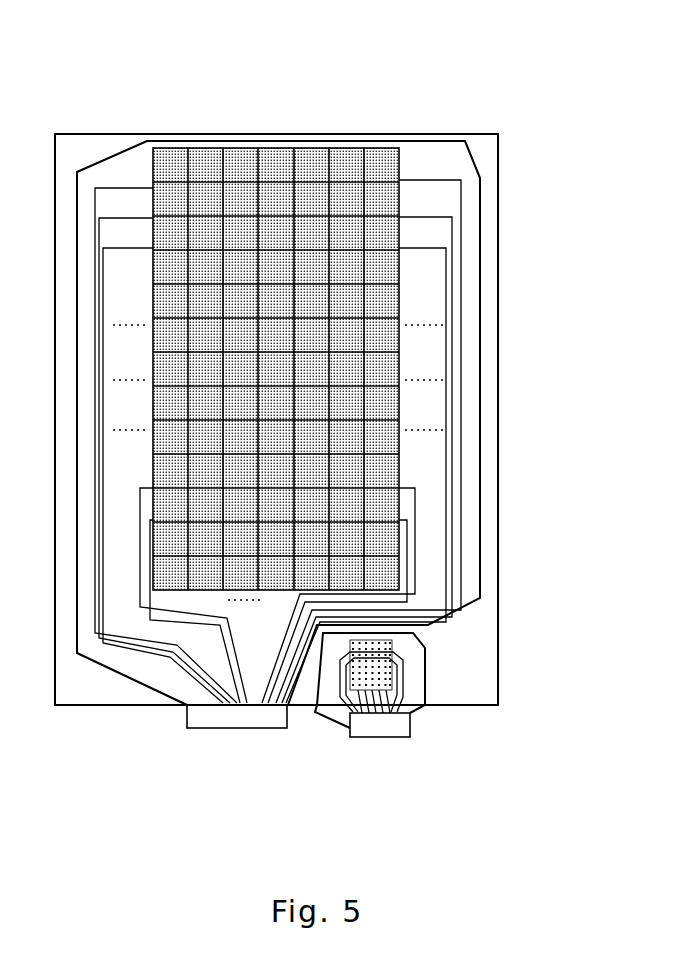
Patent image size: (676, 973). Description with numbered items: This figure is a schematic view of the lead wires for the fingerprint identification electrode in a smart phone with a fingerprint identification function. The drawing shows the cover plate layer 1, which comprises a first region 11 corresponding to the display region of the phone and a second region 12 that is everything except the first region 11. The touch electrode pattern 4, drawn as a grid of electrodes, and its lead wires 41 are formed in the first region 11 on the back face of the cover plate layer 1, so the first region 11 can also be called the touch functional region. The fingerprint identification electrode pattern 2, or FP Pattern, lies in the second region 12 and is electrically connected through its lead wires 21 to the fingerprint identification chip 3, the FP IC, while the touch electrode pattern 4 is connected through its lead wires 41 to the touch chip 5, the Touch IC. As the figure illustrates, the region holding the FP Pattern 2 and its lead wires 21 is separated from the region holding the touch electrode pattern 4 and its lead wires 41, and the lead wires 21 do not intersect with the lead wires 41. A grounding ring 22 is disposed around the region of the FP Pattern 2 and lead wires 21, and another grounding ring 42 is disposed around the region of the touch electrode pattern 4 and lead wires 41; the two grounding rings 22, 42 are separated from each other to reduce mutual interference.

The cover plate layer 1 is at (310, 419).
The fingerprint identification electrode pattern 2 is at (392, 645).
The fingerprint identification chip 3 is at (358, 733).
The touch electrode pattern 4 is at (357, 313).
The touch chip 5 is at (198, 720).
The first region 11 is at (357, 369).
The second region 12 is at (438, 532).
The lead wires for the fingerprint identification electrode 21 is at (403, 683).
The grounding ring 22 is at (429, 680).
The lead wires for the touch electrode pattern 41 is at (460, 263).
The grounding ring 42 is at (320, 423).